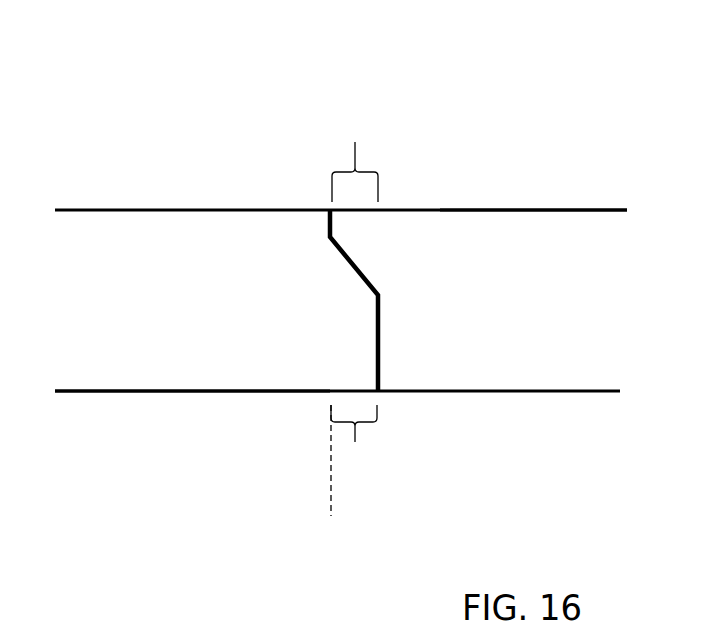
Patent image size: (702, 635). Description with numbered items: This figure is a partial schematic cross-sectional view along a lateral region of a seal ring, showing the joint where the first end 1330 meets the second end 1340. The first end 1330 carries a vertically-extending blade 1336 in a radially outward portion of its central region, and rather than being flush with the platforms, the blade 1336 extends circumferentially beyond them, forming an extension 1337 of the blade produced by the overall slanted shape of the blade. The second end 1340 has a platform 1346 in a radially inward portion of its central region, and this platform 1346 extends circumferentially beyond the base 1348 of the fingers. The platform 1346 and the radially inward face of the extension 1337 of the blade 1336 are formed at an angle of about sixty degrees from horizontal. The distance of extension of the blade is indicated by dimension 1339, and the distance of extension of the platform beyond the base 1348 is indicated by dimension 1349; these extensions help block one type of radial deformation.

The second end 1340 is at (137, 140).
The first end 1330 is at (478, 97).
The extension of the blade 1337 is at (367, 252).
The blade 1336 is at (495, 238).
The platform of the second end 1346 is at (308, 353).
The distance of extension of the platform 1349 is at (353, 158).
The distance of extension of the blade 1339 is at (358, 441).
The base of the fingers 1348 is at (325, 480).